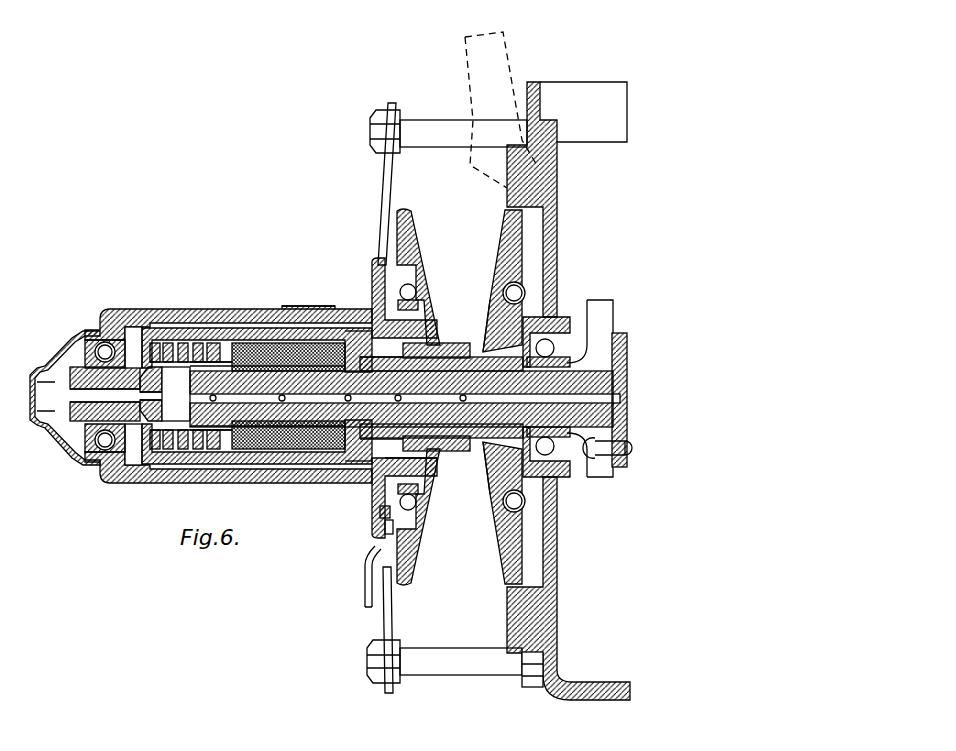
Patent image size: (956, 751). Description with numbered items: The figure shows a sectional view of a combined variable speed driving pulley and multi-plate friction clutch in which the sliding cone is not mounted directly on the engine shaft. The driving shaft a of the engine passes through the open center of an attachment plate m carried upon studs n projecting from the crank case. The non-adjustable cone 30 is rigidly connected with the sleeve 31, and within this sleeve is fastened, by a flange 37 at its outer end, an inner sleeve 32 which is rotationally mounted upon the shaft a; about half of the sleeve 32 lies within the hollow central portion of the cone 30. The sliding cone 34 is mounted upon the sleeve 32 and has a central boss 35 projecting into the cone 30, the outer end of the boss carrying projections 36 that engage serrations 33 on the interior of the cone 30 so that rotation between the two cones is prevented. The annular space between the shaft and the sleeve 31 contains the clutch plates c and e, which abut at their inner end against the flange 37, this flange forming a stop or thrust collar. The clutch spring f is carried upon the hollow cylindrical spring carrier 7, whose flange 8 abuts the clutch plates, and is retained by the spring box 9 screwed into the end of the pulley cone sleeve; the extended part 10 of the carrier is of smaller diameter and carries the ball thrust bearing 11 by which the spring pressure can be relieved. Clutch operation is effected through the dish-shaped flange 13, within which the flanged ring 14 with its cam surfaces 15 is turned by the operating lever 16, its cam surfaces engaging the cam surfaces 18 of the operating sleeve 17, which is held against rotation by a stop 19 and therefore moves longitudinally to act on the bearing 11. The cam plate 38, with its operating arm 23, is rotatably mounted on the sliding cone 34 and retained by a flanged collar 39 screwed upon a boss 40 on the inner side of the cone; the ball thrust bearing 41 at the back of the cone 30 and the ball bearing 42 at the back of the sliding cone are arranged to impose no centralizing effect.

The hollow cylindrical spring carrier 7 is at (341, 397).
The flange 8 is at (225, 452).
The spring box 9 is at (160, 455).
The extended part 10 is at (70, 420).
The ball thrust bearing 11 is at (100, 345).
The dish-shaped flange 13 is at (380, 525).
The flanged ring 14 is at (380, 510).
The cam surfaces 15 is at (350, 336).
The operating lever 16 is at (366, 580).
The operating sleeve 17 is at (136, 330).
The cam surfaces 18 is at (348, 466).
The stop 19 is at (310, 309).
The arm 23 is at (480, 77).
The non-adjustable cone 30 is at (418, 265).
The sleeve 31 is at (228, 330).
The inner sleeve 32 is at (378, 352).
The serrations 33 is at (425, 480).
The sliding cone 34 is at (500, 272).
The central boss 35 is at (455, 352).
The projections 36 is at (432, 320).
The flange 37 is at (366, 472).
The cam plate 38 is at (552, 250).
The flanged collar 39 is at (547, 320).
The boss 40 is at (497, 322).
The ball thrust bearing 41 is at (398, 292).
The ball bearing 42 is at (525, 292).
The driving shaft a is at (618, 375).
The clutch plate c is at (300, 455).
The clutch plate e is at (262, 343).
The clutch spring f is at (178, 343).
The attachment plate m is at (391, 630).
The studs n is at (457, 657).